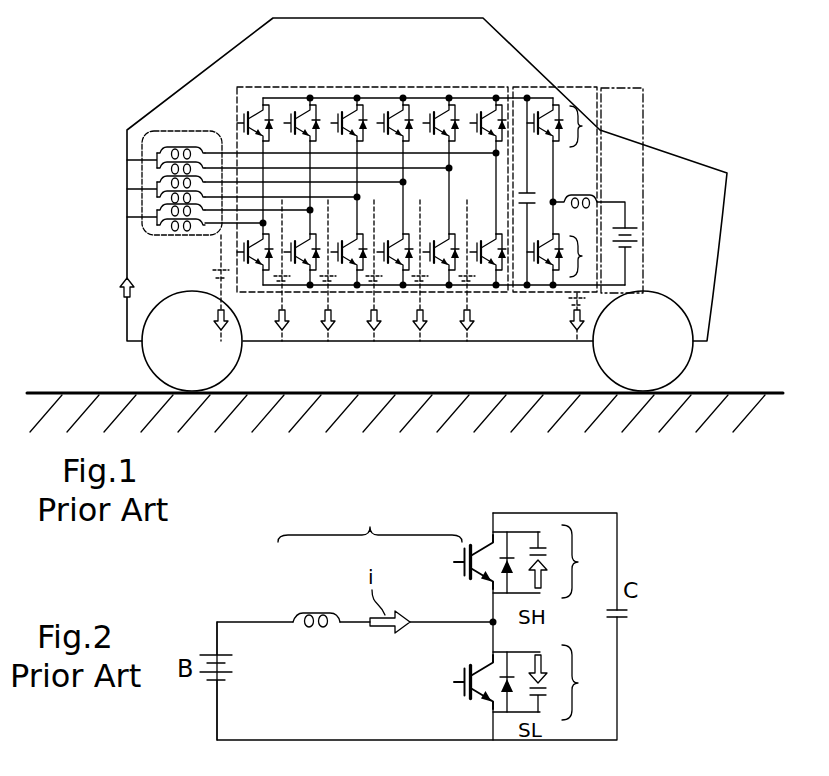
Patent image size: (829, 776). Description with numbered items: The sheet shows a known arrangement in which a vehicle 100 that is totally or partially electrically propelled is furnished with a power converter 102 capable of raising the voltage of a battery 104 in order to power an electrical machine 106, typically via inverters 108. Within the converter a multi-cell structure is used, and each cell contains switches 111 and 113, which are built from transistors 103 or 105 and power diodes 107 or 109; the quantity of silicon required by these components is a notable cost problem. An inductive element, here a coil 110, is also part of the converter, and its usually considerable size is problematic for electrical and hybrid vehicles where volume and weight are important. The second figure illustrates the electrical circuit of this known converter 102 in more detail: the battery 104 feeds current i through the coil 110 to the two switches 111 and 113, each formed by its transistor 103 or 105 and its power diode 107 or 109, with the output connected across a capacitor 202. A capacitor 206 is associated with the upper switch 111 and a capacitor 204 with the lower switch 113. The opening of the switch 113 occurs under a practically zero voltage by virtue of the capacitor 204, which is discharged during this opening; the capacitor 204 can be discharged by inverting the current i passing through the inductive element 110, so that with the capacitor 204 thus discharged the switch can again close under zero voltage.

In FIG. 1, the vehicle 100 is at (539, 322).
In FIG. 1, the power converter 102 is at (512, 81).
In FIG. 2, the power converter 102 is at (370, 517).
In FIG. 1, the transistor 103 is at (535, 120).
In FIG. 2, the transistor 103 is at (456, 566).
In FIG. 1, the battery 104 is at (638, 238).
In FIG. 2, the battery 104 is at (230, 668).
In FIG. 1, the transistor 105 is at (538, 270).
In FIG. 2, the transistor 105 is at (457, 683).
In FIG. 1, the electrical machine 106 is at (182, 127).
In FIG. 1, the power diode 107 is at (563, 132).
In FIG. 2, the power diode 107 is at (508, 553).
In FIG. 1, the inverters 108 is at (333, 82).
In FIG. 1, the power diode 109 is at (561, 236).
In FIG. 2, the power diode 109 is at (510, 674).
In FIG. 1, the coil 110 is at (580, 200).
In FIG. 2, the coil 110 is at (322, 637).
In FIG. 1, the switch 111 is at (577, 110).
In FIG. 2, the switch 111 is at (554, 561).
In FIG. 1, the switch 113 is at (582, 264).
In FIG. 2, the switch 113 is at (554, 682).
In FIG. 2, the smoothing capacitor C 202 is at (628, 614).
In FIG. 2, the capacitor 204 is at (545, 699).
In FIG. 2, the upper parasitic capacitance 206 is at (552, 548).